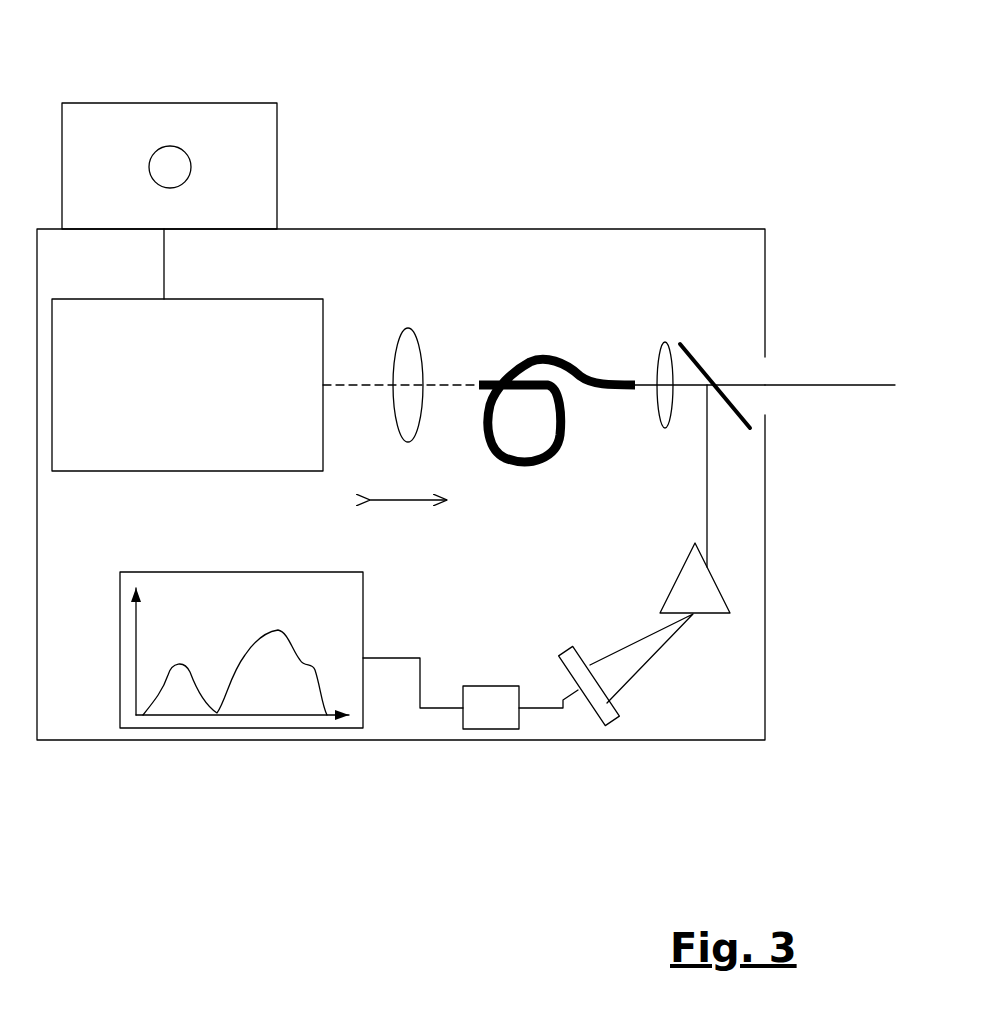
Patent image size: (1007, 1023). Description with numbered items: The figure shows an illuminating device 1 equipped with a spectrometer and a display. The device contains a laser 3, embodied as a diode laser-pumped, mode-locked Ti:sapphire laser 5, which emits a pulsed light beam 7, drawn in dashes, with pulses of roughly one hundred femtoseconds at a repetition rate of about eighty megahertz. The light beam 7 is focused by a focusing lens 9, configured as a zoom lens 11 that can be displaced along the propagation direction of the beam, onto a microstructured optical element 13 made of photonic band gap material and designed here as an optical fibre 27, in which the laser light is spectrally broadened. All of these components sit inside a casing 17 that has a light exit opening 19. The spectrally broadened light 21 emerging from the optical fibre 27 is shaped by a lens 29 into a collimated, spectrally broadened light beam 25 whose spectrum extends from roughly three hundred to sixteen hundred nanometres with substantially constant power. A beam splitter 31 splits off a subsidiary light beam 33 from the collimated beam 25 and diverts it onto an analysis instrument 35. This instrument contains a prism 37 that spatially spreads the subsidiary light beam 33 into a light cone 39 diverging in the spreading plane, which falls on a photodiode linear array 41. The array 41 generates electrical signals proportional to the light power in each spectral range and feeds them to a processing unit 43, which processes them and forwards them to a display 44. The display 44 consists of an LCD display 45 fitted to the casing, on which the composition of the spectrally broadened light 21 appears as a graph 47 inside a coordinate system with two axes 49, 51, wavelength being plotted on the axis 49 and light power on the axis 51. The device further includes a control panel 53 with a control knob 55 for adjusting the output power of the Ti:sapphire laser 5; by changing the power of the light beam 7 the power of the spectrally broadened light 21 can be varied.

The illuminating device 1 is at (463, 158).
The laser 3 is at (187, 354).
The Ti:sapphire laser 5 is at (193, 315).
The pulsed light beam 7 is at (335, 383).
The focusing lens 9 is at (436, 379).
The zoom lens 11 is at (408, 413).
The microstructured optical element 13 is at (557, 427).
The casing 17 is at (236, 658).
The light exit opening 19 is at (766, 373).
The spectrally broadened light 21 is at (634, 368).
The collimated, spectrally broadened light beam 25 is at (820, 386).
The optical fibre 27 is at (572, 364).
The lens 29 is at (665, 404).
The beam splitter 31 is at (697, 355).
The subsidiary light beam 33 is at (707, 490).
The analysis instrument 35 is at (604, 636).
The prism 37 is at (688, 573).
The light cone 39 is at (621, 670).
The photodiode linear array 41 is at (605, 715).
The processing unit 43 is at (505, 700).
The display 44 is at (236, 645).
The LCD display 45 is at (246, 660).
The graph 47 is at (250, 643).
The axis 49 is at (305, 715).
The axis 51 is at (136, 629).
The control panel 53 is at (176, 152).
The control knob 55 is at (162, 163).